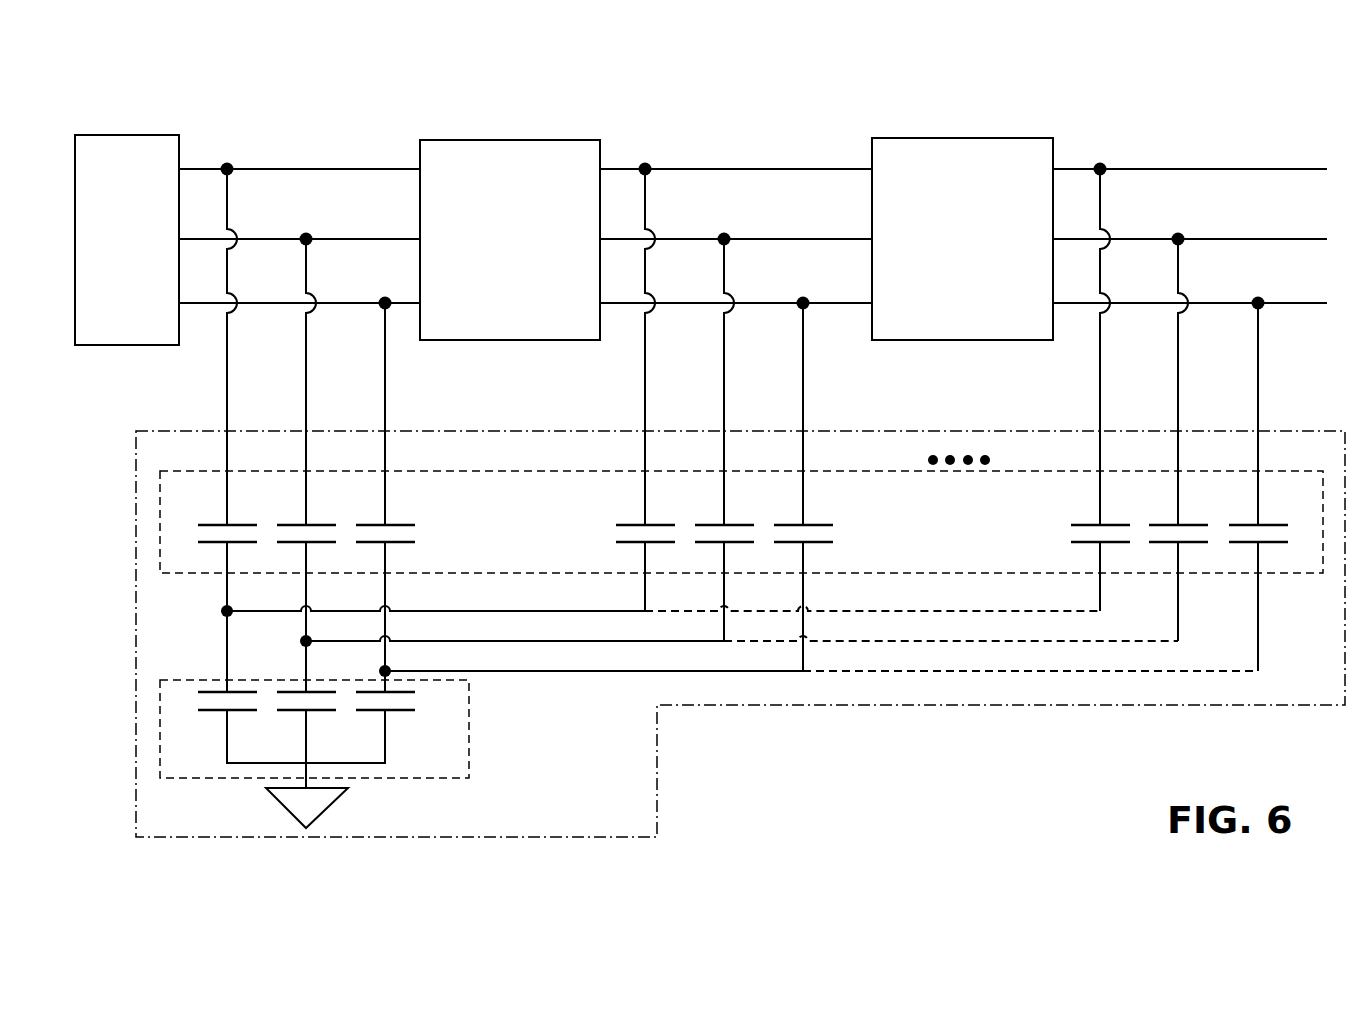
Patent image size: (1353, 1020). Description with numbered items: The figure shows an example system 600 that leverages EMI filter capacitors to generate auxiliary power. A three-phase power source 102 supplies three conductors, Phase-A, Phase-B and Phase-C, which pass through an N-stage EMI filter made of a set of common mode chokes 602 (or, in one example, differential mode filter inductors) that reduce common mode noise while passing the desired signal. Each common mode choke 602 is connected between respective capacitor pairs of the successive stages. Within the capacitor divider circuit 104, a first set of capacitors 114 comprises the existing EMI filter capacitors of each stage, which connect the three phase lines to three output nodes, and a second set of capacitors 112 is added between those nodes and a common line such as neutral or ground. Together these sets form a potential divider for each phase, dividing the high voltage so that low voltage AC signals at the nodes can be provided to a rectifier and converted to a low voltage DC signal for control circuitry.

The system 600 is at (1238, 60).
The three-phase power source 102 is at (148, 346).
The common mode choke 602 is at (492, 138).
The capacitor divider circuit 104 is at (963, 705).
The first set of capacitors 114 is at (160, 525).
The second set of capacitors 112 is at (160, 698).